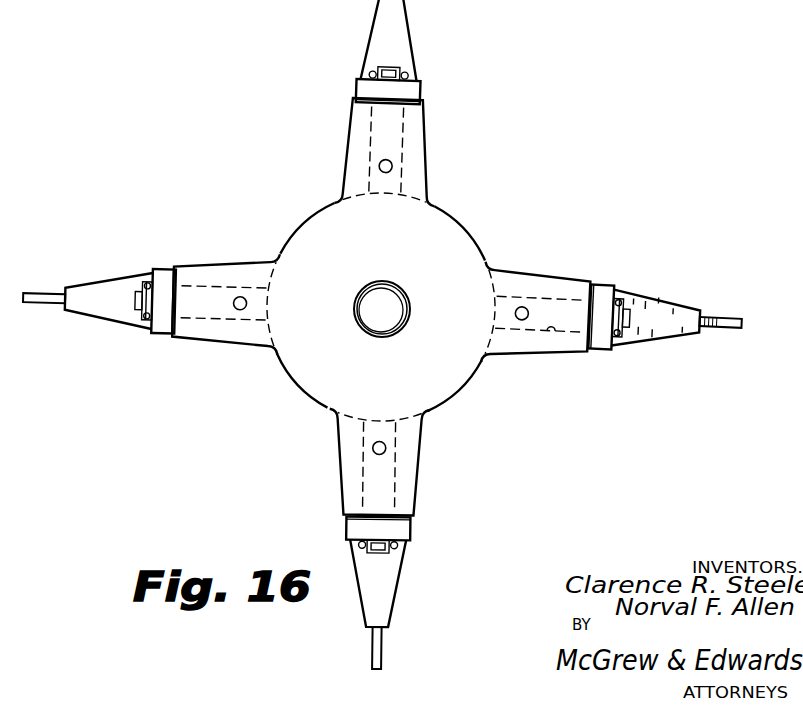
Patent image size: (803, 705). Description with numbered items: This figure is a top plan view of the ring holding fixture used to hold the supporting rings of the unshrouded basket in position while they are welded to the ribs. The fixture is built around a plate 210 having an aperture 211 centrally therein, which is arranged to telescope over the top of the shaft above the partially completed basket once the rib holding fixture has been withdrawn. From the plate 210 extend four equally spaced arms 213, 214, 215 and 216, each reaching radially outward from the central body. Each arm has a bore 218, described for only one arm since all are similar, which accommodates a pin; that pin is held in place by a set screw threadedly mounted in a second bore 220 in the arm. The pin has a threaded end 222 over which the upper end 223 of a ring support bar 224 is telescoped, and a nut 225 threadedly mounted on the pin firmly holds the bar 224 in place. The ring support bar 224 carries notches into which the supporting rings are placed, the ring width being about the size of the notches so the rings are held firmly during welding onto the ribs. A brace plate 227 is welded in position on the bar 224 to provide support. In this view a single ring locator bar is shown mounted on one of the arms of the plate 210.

The plate 210 is at (452, 243).
The aperture 211 is at (378, 330).
The arm 213 is at (412, 144).
The arm 214 is at (213, 268).
The arm 215 is at (403, 483).
The arm 216 is at (518, 345).
The bore 218 is at (558, 329).
The bore 220 is at (526, 306).
The threaded end 222 is at (628, 308).
The upper end 223 is at (600, 292).
The ring support bar 224 is at (720, 318).
The nut 225 is at (620, 333).
The brace plate 227 is at (667, 302).